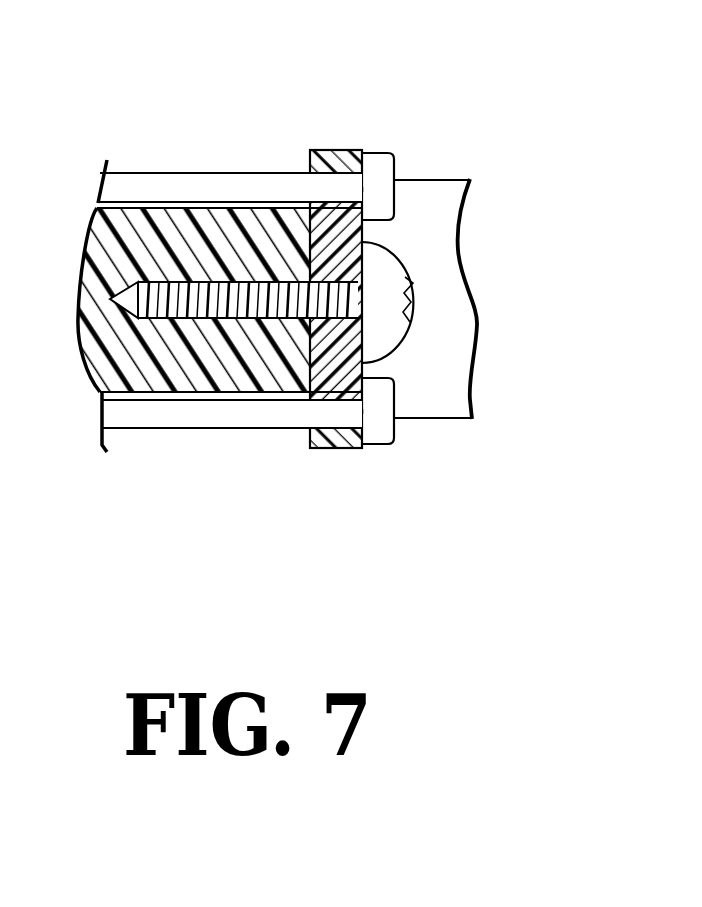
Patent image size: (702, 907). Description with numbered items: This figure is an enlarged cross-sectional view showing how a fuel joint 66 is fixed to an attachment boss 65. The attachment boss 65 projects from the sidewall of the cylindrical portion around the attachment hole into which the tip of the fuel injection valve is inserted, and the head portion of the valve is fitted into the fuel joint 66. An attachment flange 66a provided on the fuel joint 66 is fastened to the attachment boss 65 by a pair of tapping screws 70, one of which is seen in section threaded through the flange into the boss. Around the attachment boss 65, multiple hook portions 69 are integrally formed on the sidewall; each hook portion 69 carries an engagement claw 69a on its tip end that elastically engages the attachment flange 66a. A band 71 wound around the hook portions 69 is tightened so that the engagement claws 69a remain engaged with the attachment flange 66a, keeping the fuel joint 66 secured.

The attachment boss 65 is at (207, 232).
The fuel joint 66 is at (437, 202).
The attachment flange 66a is at (306, 369).
The hook portion 69 is at (149, 182).
The engagement claw 69a is at (384, 170).
The tapping screw 70 is at (388, 309).
The band 71 is at (327, 440).